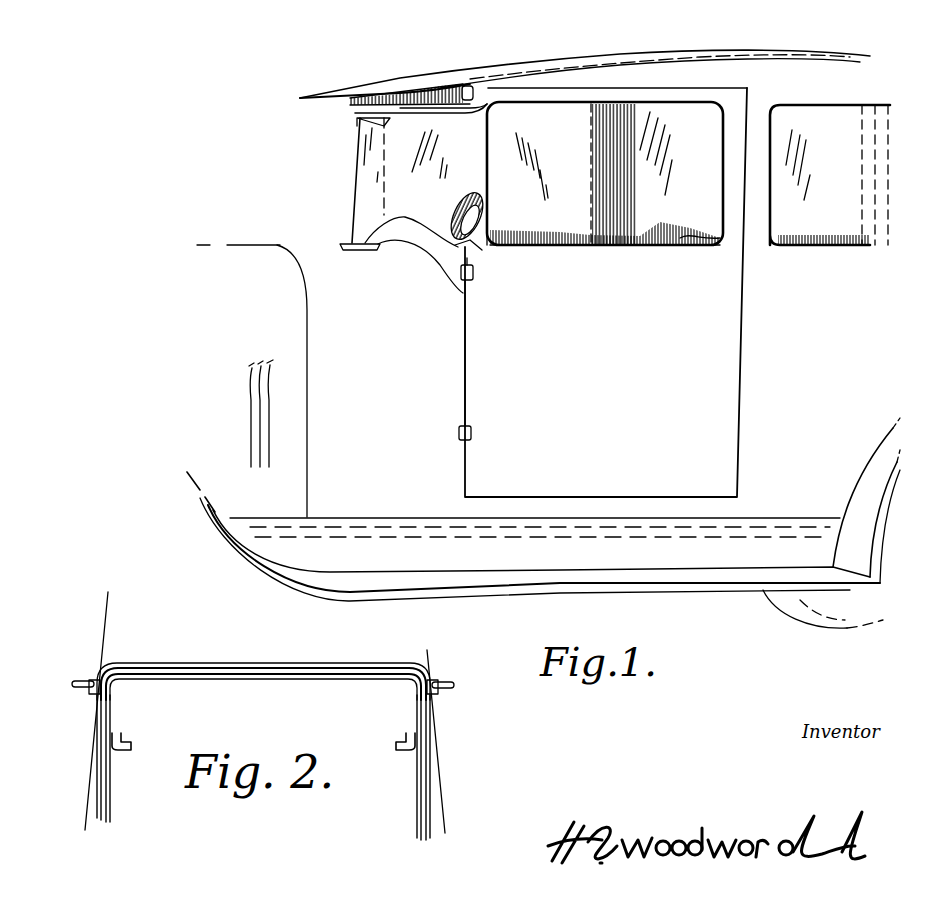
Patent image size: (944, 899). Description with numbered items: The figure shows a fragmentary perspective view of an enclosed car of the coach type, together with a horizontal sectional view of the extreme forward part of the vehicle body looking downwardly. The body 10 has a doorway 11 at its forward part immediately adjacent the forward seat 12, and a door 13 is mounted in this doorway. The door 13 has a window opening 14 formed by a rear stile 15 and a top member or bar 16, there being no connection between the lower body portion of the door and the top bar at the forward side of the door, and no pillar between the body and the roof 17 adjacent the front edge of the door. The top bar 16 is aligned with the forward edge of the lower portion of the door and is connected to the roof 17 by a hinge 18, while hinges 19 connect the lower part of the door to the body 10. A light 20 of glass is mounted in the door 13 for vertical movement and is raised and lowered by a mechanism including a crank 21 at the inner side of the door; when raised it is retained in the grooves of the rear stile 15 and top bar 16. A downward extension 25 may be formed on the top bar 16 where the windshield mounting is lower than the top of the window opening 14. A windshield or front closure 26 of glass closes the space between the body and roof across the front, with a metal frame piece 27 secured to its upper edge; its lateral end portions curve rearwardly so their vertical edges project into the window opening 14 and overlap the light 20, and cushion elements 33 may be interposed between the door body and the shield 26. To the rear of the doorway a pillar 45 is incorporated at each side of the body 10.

In FIG. 1, the body 10 is at (832, 402).
In FIG. 2, the body 10 is at (118, 633).
In FIG. 1, the doorway 11 is at (758, 108).
In FIG. 1, the forward seat 12 is at (770, 233).
In FIG. 1, the door 13 is at (665, 362).
In FIG. 2, the door 13 is at (88, 793).
In FIG. 1, the window opening 14 is at (660, 108).
In FIG. 1, the rear stile 15 is at (732, 130).
In FIG. 1, the top member or bar 16 is at (618, 96).
In FIG. 1, the roof 17 is at (513, 77).
In FIG. 1, the hinge 18 is at (462, 99).
In FIG. 1, the hinges 19 is at (470, 425).
In FIG. 2, the hinges 19 is at (84, 677).
In FIG. 1, the light 20 is at (565, 165).
In FIG. 2, the light 20 is at (105, 767).
In FIG. 2, the crank 21 is at (128, 744).
In FIG. 1, the downward extension 25 is at (482, 104).
In FIG. 1, the windshield or front closure 26 is at (400, 178).
In FIG. 2, the windshield or front closure 26 is at (262, 668).
In FIG. 1, the metal frame piece 27 is at (392, 117).
In FIG. 1, the cushion elements 33 is at (480, 258).
In FIG. 2, the cushion elements 33 is at (88, 697).
In FIG. 1, the pillar 45 is at (757, 153).